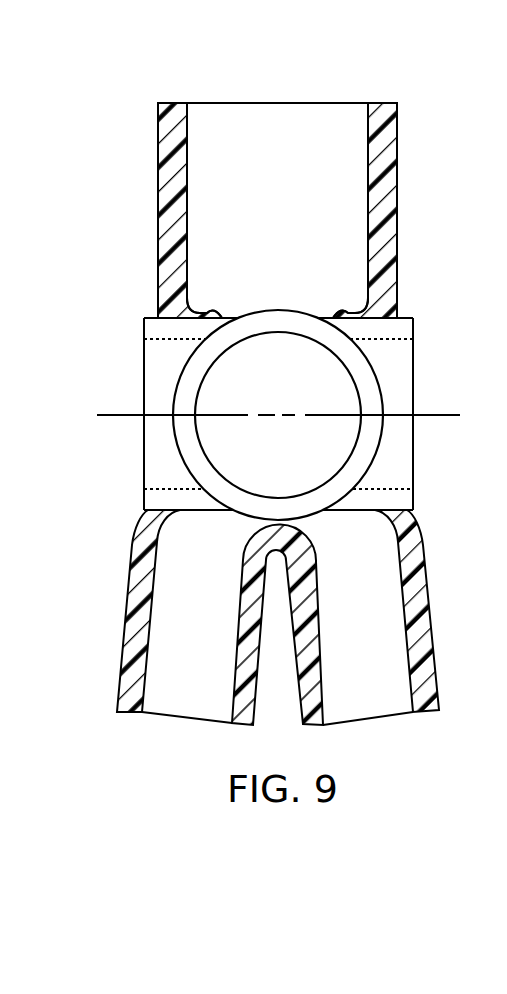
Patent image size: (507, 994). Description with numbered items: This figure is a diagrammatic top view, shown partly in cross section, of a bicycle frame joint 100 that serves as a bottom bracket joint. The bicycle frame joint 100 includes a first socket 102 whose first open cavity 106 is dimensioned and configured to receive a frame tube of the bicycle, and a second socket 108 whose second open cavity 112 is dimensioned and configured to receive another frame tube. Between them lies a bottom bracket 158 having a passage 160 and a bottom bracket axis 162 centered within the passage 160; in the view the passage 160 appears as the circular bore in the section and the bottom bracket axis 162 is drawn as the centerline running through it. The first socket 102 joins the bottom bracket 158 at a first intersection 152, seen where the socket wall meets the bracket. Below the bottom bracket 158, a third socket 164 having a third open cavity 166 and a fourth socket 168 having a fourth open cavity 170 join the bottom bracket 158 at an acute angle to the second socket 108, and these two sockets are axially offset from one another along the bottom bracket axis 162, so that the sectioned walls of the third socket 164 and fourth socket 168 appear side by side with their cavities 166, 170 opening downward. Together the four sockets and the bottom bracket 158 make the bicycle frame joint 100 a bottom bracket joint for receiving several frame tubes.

The bicycle frame joint 100 is at (251, 84).
The first socket 102 is at (397, 188).
The first open cavity 106 is at (267, 167).
The first intersection 152 is at (204, 311).
The bottom bracket 158 is at (440, 337).
The passage 160 is at (150, 342).
The bottom bracket axis 162 is at (110, 413).
The second socket 108 is at (377, 450).
The second open cavity 112 is at (315, 462).
The third socket 164 is at (123, 652).
The fourth socket 168 is at (433, 640).
The third open cavity 166 is at (208, 693).
The fourth open cavity 170 is at (392, 698).